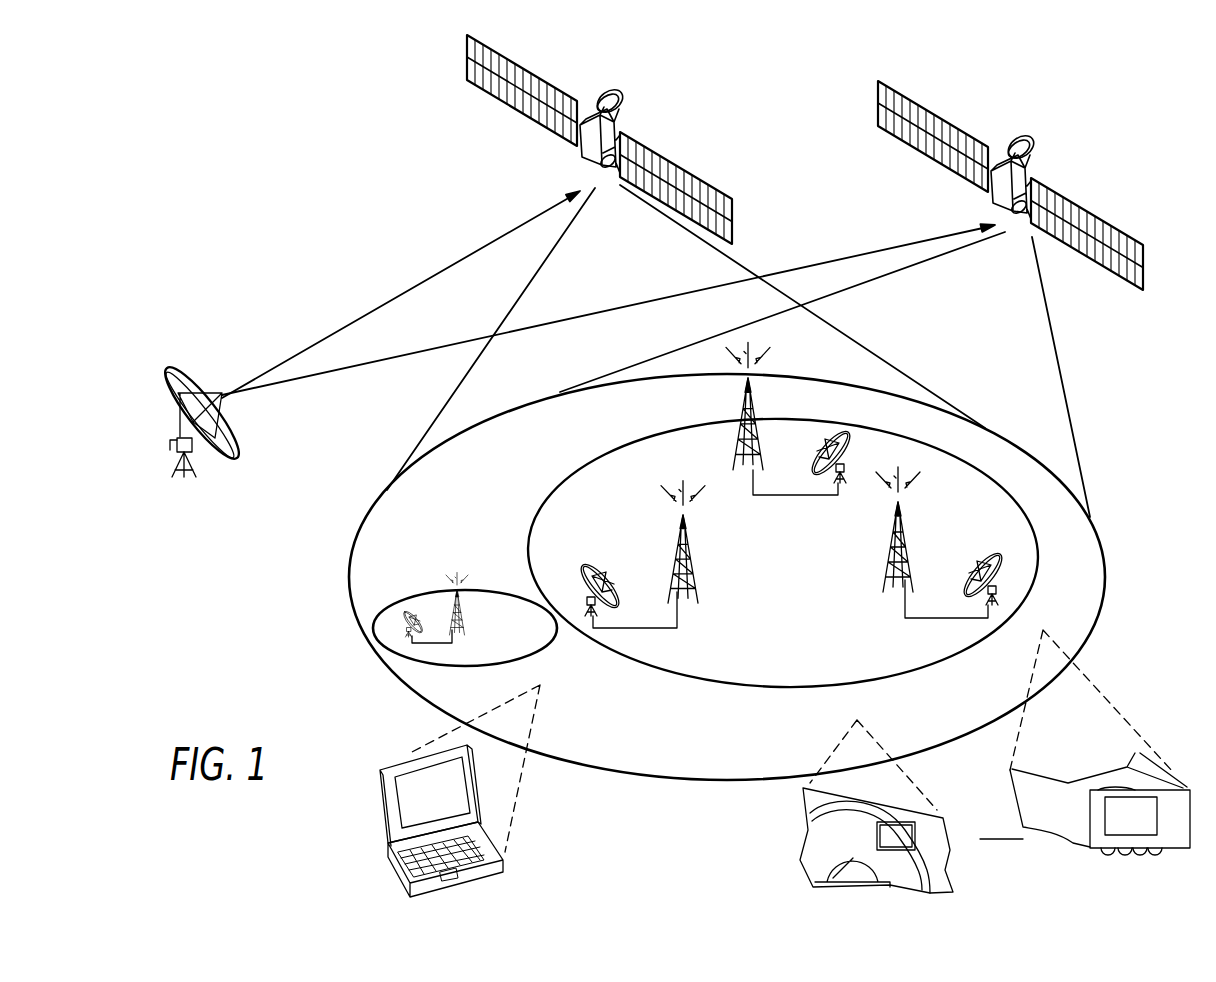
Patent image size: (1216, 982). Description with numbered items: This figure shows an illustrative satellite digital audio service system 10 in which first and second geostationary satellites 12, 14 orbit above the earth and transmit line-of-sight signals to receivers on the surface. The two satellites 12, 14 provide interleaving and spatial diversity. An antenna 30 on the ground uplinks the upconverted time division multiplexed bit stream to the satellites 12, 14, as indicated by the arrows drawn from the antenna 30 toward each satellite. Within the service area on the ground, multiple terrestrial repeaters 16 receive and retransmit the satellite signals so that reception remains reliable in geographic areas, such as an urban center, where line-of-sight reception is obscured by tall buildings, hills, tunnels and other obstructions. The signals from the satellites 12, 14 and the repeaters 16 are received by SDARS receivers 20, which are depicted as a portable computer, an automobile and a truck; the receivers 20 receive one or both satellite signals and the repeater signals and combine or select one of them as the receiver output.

The satellite digital audio service system 10 is at (814, 180).
The first geostationary satellite 12 is at (693, 177).
The second geostationary satellite 14 is at (1103, 217).
The terrestrial repeater 16 is at (450, 605).
The SDARS receiver 20 is at (540, 685).
The antenna 30 is at (235, 437).